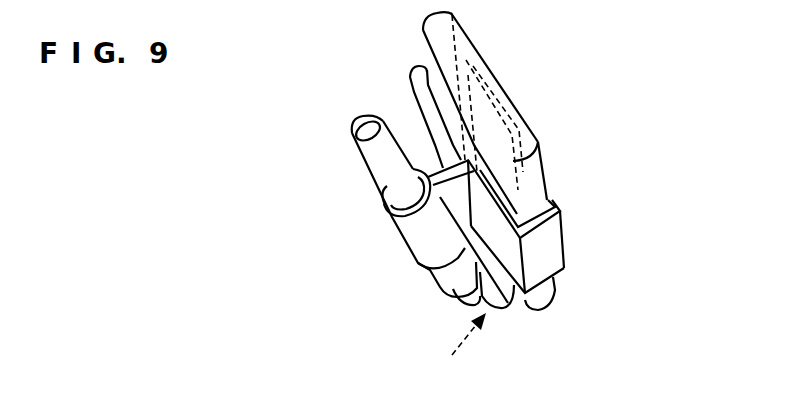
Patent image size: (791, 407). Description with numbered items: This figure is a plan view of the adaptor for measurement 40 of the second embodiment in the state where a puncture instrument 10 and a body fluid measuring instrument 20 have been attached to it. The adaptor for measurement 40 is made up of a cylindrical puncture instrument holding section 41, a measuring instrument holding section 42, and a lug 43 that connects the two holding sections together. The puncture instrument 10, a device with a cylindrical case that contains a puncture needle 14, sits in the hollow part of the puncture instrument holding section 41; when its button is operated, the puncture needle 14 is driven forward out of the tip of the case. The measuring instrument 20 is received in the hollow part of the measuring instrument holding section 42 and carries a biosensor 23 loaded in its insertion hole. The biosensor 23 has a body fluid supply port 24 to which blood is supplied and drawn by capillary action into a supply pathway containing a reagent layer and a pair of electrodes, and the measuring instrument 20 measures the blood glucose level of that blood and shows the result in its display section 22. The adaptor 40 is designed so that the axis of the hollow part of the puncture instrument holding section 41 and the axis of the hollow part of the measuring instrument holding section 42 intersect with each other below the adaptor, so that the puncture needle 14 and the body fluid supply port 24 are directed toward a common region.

The puncture instrument 10 is at (392, 170).
The puncture needle 14 is at (448, 342).
The body fluid measuring instrument 20 is at (539, 136).
The display section 22 is at (508, 97).
The biosensor 23 is at (505, 302).
The body fluid supply port 24 is at (497, 309).
The adaptor for measurement 40 is at (571, 238).
The puncture instrument holding section 41 is at (412, 245).
The measuring instrument holding section 42 is at (412, 79).
The lug 43 is at (433, 172).